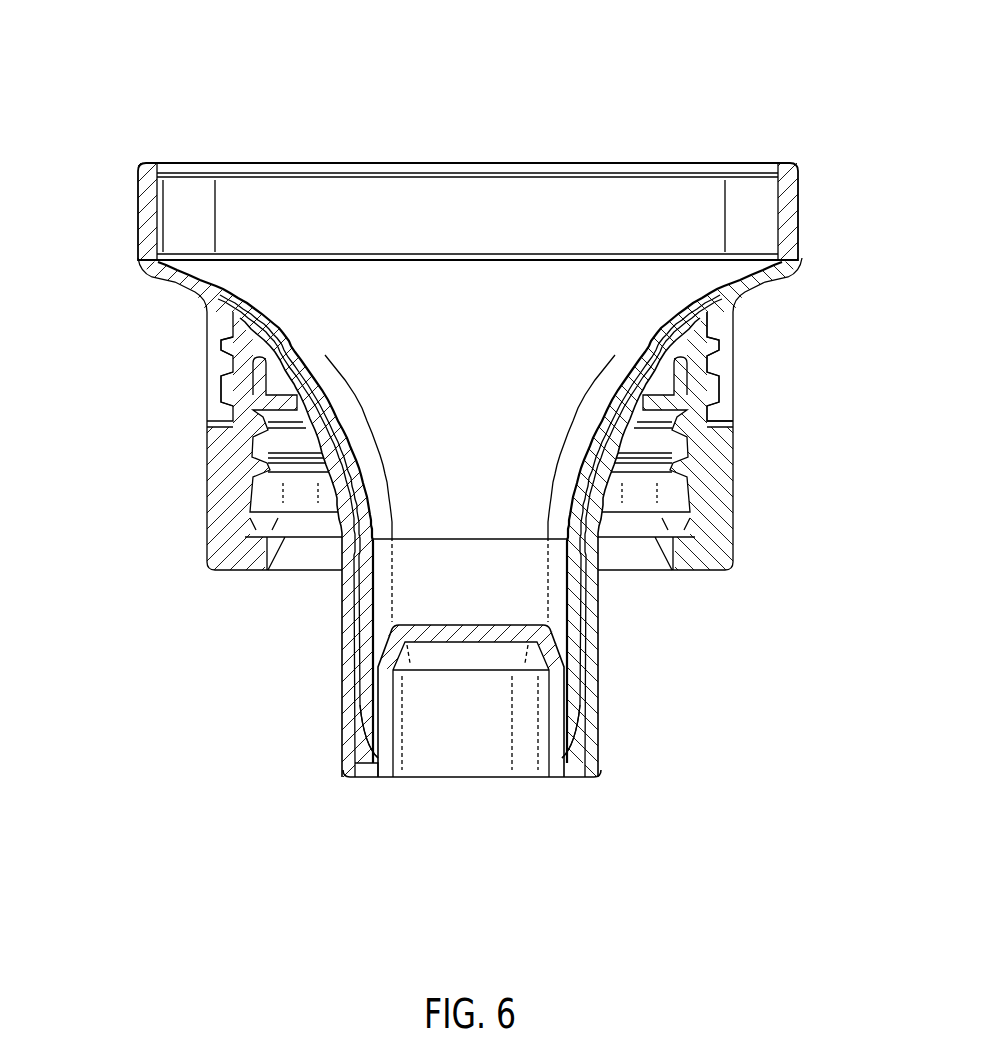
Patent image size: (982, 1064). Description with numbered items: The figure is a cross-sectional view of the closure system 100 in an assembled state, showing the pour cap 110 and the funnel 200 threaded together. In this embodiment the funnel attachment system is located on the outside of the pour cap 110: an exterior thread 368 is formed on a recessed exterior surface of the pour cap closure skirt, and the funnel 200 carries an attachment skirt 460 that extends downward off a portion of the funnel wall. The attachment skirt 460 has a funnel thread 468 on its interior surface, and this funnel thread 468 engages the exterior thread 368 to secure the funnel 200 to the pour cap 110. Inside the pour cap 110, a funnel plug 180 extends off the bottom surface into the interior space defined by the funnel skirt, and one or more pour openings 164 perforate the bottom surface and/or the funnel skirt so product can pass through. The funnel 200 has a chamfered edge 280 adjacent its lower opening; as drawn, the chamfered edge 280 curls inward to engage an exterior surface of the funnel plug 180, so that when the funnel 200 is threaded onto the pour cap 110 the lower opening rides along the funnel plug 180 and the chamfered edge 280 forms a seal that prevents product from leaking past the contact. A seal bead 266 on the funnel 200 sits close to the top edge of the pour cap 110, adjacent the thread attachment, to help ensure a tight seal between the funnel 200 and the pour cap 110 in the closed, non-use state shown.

The closure system 100 is at (203, 103).
The pour cap 110 is at (182, 515).
The pour opening 164 is at (362, 783).
The funnel plug 180 is at (503, 760).
The funnel 200 is at (486, 409).
The seal bead 266 is at (690, 313).
The chamfered edge 280 is at (590, 742).
The exterior thread 368 is at (230, 355).
The attachment skirt 460 is at (745, 343).
The funnel thread 468 is at (220, 386).